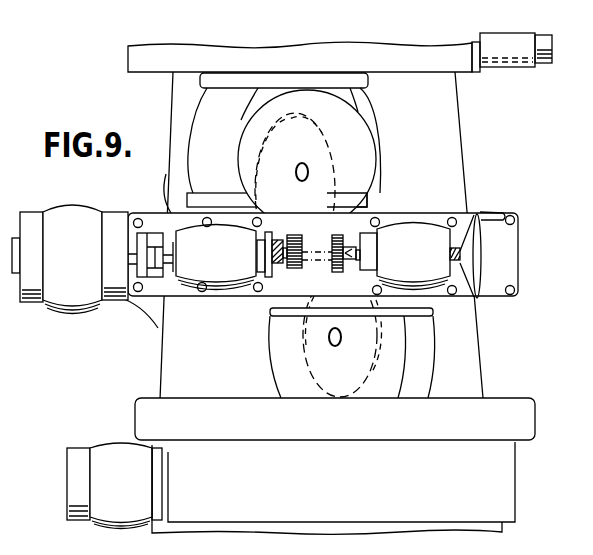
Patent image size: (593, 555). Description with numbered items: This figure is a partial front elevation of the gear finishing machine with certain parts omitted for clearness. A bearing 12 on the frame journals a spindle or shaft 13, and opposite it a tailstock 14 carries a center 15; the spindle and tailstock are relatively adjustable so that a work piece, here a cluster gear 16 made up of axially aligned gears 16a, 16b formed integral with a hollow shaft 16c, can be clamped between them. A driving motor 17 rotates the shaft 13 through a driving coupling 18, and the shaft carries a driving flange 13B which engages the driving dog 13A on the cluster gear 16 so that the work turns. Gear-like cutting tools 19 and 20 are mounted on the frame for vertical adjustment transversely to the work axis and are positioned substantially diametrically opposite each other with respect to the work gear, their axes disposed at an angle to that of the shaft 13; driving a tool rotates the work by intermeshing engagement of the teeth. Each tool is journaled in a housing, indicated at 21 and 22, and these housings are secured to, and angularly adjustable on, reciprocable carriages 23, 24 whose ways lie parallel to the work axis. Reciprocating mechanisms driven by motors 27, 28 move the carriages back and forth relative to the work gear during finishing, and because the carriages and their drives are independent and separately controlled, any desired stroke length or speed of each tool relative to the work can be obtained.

The bearing 12 is at (202, 233).
The spindle or shaft 13 is at (252, 228).
The driving dog 13A is at (278, 263).
The driving flange 13B is at (266, 240).
The tailstock 14 is at (415, 233).
The center 15 is at (347, 252).
The cluster gear 16 is at (301, 253).
The gear 16a is at (294, 235).
The gear 16b is at (342, 230).
The hollow shaft 16c is at (317, 246).
The driving motor 17 is at (73, 208).
The driving coupling 18 is at (152, 270).
The cutting tool 19 is at (332, 152).
The cutting tool 20 is at (377, 306).
The tool housing 21 is at (378, 166).
The tool housing 22 is at (270, 368).
The reciprocable carriage 23 is at (137, 63).
The reciprocable carriage 24 is at (508, 467).
The motor 27 is at (503, 67).
The motor 28 is at (107, 453).